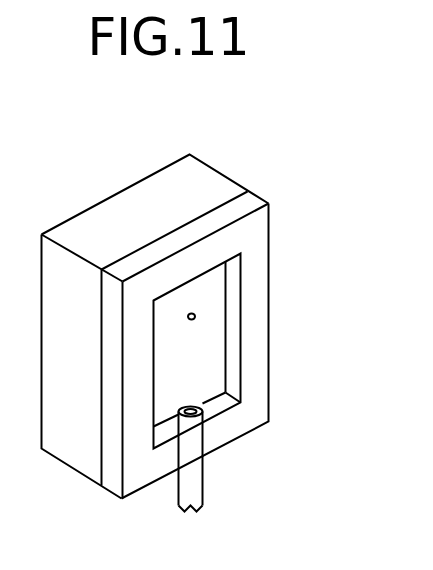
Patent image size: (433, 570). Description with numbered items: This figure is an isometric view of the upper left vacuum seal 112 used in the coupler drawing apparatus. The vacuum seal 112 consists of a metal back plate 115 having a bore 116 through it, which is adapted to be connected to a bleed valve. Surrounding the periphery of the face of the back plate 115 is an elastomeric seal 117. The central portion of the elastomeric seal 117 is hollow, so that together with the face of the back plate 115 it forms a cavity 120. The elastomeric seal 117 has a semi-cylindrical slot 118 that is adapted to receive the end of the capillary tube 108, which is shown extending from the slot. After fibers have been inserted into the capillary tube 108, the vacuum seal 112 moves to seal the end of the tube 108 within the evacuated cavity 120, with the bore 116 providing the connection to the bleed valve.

The vacuum seal 112 is at (190, 304).
The metal back plate 115 is at (173, 183).
The bore 116 is at (195, 313).
The elastomeric seal 117 is at (255, 389).
The semi-cylindrical slot 118 is at (201, 418).
The cavity 120 is at (208, 377).
The capillary tube 108 is at (243, 463).